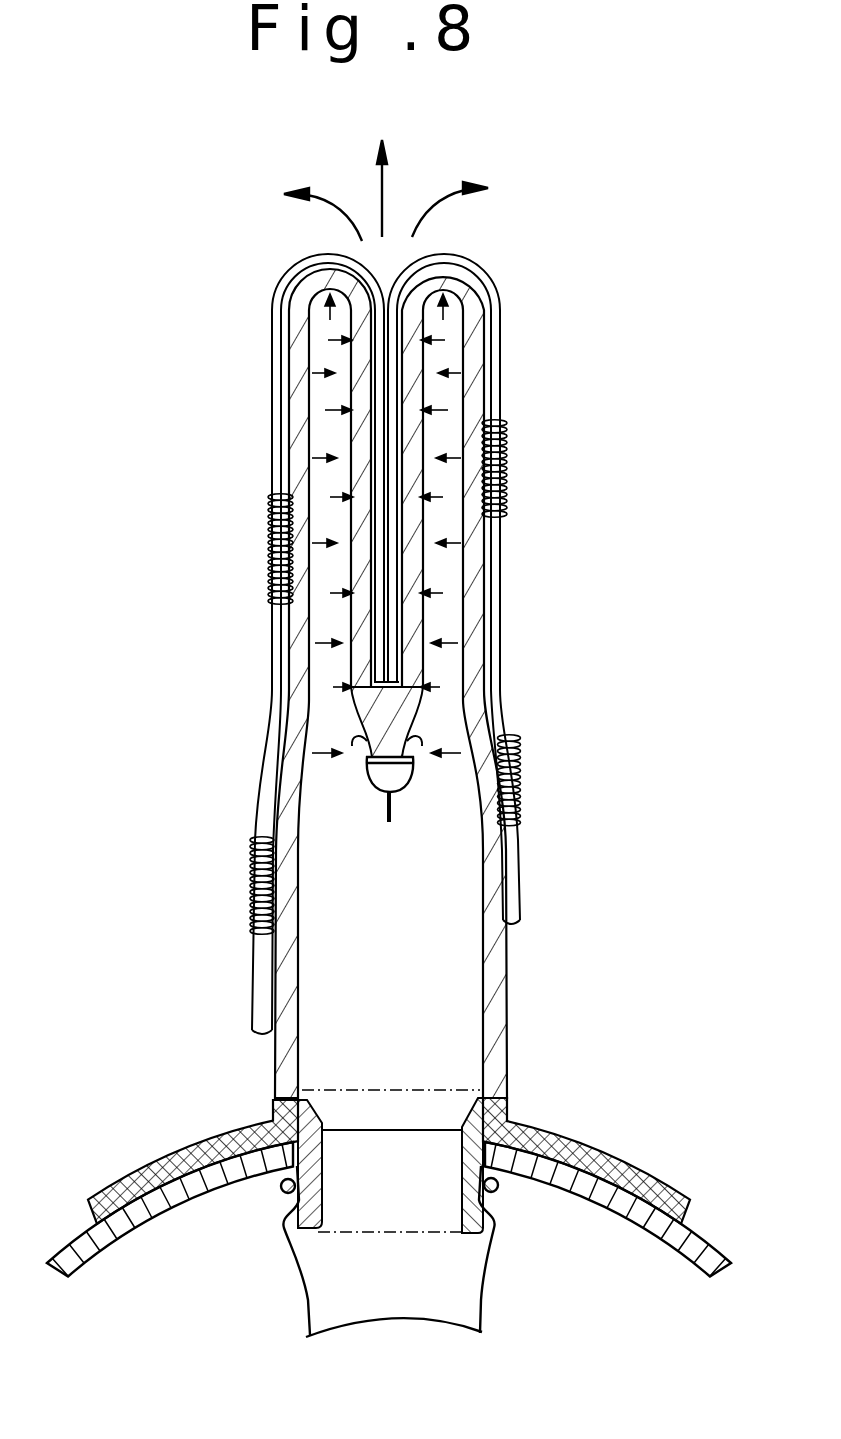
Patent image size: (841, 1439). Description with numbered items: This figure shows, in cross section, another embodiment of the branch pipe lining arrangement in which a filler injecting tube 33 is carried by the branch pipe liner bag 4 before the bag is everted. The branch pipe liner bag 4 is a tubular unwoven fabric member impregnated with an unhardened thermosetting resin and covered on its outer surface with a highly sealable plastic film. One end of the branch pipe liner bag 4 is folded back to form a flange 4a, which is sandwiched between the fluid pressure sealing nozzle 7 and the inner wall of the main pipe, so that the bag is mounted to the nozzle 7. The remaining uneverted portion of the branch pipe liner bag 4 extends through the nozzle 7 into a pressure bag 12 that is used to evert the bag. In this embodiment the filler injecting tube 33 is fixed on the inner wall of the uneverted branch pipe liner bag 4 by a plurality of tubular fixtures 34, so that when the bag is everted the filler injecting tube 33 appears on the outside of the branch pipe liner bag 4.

The branch pipe liner bag 4 is at (507, 1037).
The flange 4a is at (613, 1157).
The fluid pressure sealing nozzle 7 is at (685, 1255).
The pressure bag 12 is at (482, 1288).
The filler injecting tube 33 is at (270, 693).
The tubular fixtures 34 is at (268, 545).